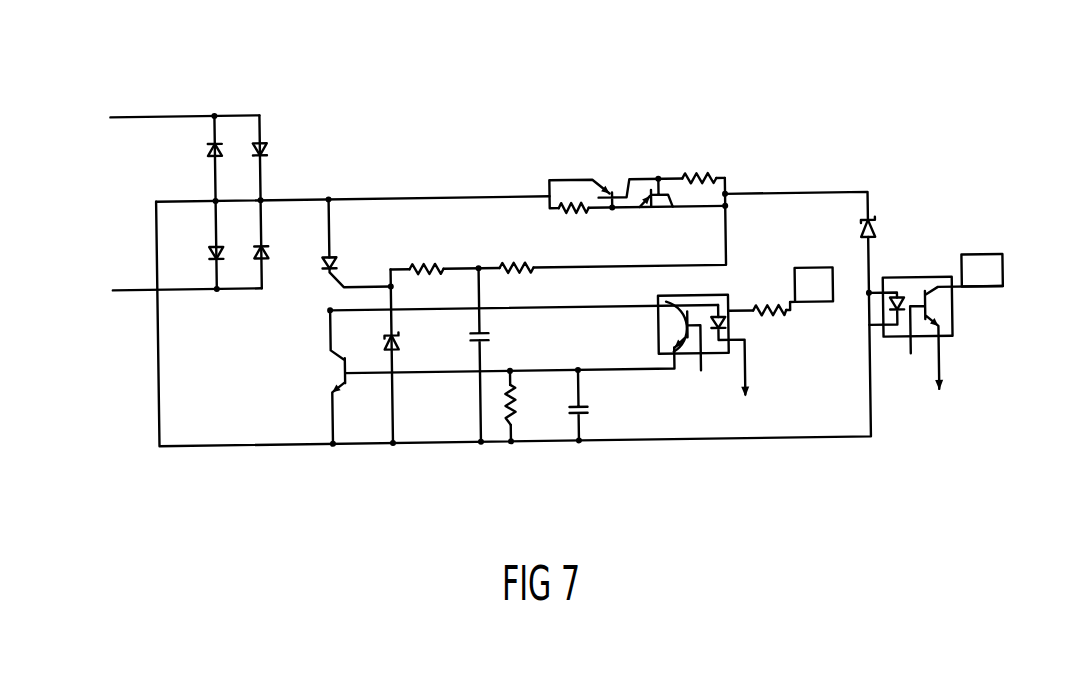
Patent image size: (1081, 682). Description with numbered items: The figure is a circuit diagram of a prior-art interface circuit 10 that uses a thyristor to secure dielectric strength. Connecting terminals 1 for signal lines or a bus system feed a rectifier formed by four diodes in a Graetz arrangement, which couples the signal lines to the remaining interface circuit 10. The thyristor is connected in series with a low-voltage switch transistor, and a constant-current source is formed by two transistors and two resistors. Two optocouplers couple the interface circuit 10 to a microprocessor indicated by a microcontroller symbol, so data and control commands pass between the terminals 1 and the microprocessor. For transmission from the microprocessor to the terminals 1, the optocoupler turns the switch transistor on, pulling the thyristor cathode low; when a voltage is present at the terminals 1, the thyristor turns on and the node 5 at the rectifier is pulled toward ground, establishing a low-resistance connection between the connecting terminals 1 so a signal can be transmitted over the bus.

The connecting terminals 1 is at (131, 113).
The node 5 is at (263, 197).
The interface circuit 10 is at (571, 82).